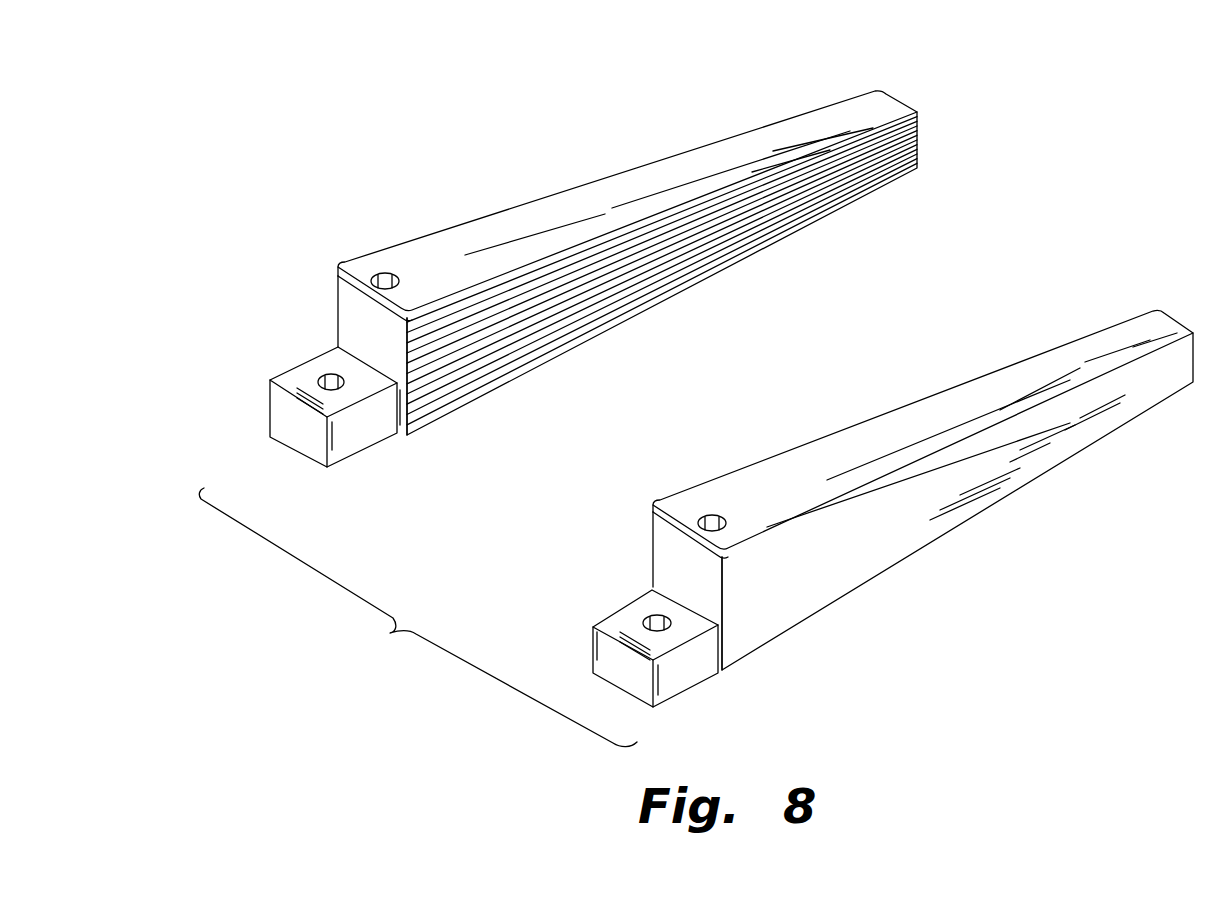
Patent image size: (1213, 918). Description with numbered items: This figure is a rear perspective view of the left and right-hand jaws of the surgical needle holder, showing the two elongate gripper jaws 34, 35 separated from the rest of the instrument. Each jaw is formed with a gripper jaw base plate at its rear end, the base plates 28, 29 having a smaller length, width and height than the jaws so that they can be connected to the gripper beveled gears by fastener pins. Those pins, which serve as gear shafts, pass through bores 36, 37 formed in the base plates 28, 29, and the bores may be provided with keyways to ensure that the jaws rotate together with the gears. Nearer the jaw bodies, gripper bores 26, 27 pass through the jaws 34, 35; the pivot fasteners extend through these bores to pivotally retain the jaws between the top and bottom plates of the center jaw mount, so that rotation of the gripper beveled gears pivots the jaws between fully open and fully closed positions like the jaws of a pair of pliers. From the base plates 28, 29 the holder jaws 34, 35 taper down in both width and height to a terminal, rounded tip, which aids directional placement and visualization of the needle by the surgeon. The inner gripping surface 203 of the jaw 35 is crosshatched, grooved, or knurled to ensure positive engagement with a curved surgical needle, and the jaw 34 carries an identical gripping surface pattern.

The gripper jaw 35 is at (781, 140).
The gripping surface 203 is at (768, 228).
The gripper bore 27 is at (387, 282).
The gripper jaw base plate 29 is at (352, 440).
The bore 36 is at (331, 382).
The gripper jaw 34 is at (1027, 378).
The gripper bore 26 is at (710, 520).
The gripper jaw base plate 28 is at (690, 662).
The bore 37 is at (655, 618).